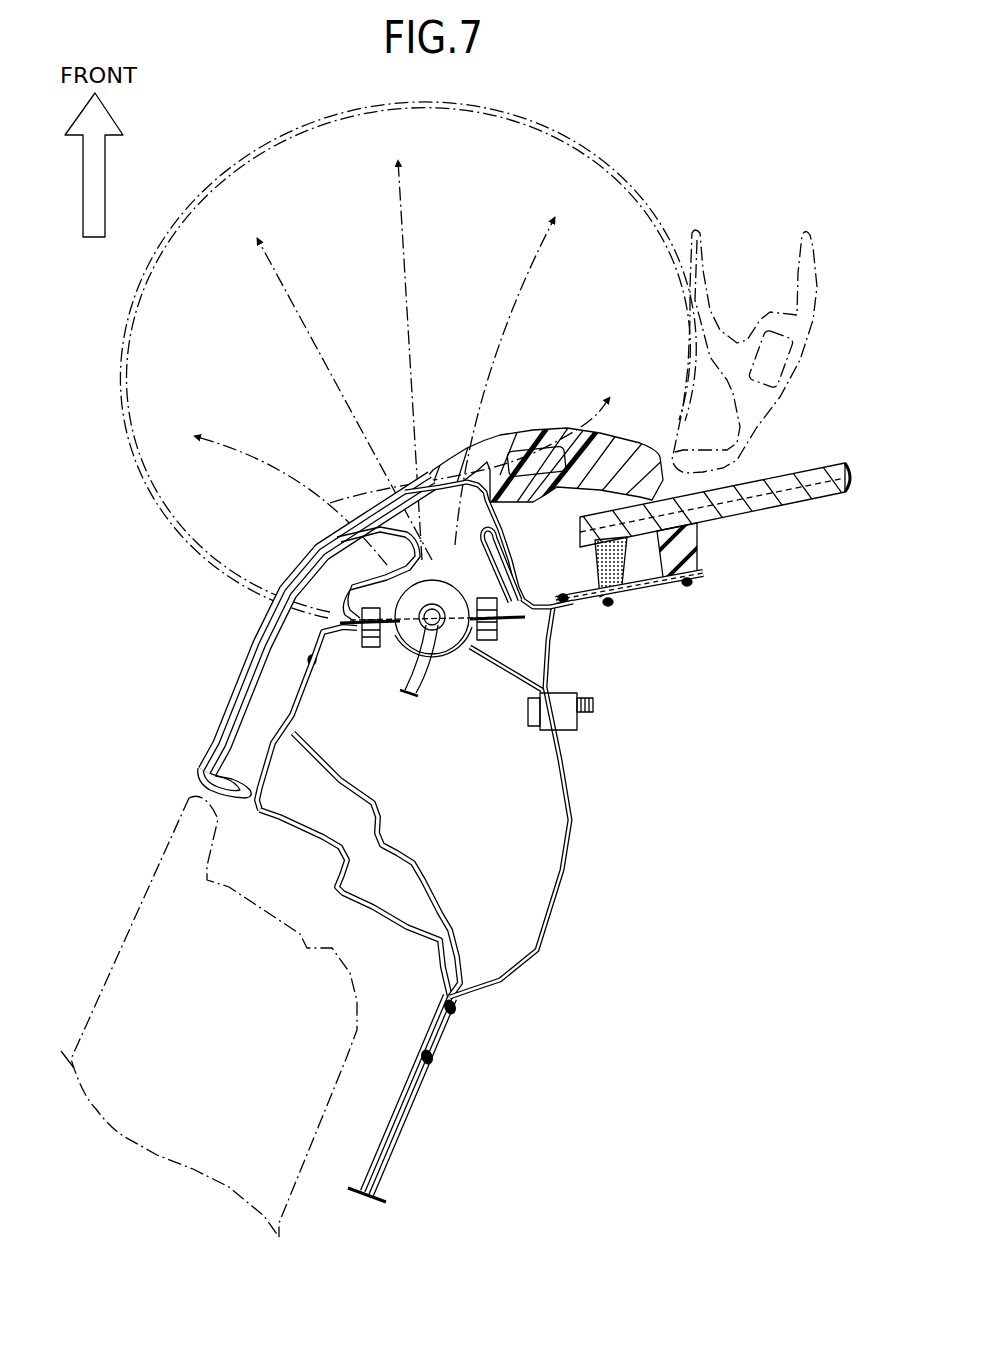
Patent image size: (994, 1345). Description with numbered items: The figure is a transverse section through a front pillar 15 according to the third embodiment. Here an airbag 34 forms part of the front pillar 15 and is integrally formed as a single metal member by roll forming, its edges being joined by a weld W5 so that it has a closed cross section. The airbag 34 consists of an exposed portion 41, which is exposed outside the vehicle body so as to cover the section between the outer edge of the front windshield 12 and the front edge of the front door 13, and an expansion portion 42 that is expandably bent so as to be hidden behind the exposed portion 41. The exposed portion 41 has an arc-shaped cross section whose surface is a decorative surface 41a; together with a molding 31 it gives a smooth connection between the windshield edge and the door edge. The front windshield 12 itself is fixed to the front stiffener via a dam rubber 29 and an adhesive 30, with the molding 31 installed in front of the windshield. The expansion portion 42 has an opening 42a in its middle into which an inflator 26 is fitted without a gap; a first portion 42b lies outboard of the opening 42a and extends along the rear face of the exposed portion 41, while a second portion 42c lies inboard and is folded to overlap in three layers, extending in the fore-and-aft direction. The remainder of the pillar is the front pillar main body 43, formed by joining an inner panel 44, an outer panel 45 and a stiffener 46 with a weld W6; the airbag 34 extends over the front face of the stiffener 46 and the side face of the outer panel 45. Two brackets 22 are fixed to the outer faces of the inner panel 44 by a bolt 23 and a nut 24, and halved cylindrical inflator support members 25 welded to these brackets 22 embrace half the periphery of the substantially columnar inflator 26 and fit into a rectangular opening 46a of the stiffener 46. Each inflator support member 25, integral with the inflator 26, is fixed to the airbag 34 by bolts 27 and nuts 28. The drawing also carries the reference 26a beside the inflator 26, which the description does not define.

The front windshield 12 is at (790, 488).
The front door 13 is at (118, 942).
The front pillar 15 is at (292, 556).
The bracket 22 is at (507, 670).
The bolt 23 is at (532, 715).
The nut 24 is at (578, 715).
The inflator support member 25 is at (403, 680).
The inflator 26 is at (445, 578).
The inflator flange 26a is at (417, 567).
The bolt 27 is at (357, 600).
The nut 28 is at (370, 650).
The dam rubber 29 is at (700, 546).
The adhesive 30 is at (612, 580).
The molding 31 is at (612, 437).
The airbag 34 is at (605, 148).
The exposed portion 41 is at (268, 622).
The decorative surface 41a is at (297, 587).
The expansion portion 42 is at (409, 535).
The opening 42a is at (447, 672).
The first portion 42b is at (238, 705).
The second portion 42c is at (500, 553).
The front pillar main body 43 is at (382, 934).
The inner panel 44 is at (570, 820).
The outer panel 45 is at (318, 835).
The stiffener 46 is at (395, 850).
The rectangular opening 46a is at (470, 643).
The weld W5 is at (566, 605).
The weld W6 is at (690, 586).